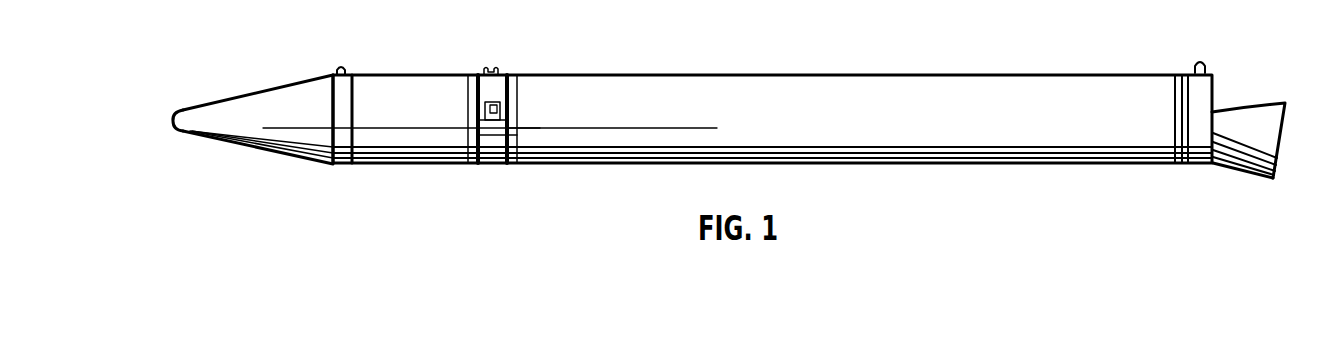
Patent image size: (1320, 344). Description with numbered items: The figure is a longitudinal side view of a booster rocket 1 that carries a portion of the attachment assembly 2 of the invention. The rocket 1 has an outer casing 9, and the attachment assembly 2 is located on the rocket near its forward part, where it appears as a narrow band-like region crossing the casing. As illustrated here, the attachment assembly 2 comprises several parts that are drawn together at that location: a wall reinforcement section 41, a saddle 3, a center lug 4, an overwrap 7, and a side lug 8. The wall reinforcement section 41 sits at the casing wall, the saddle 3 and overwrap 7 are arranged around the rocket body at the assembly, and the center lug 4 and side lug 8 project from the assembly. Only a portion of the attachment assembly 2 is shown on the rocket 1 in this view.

The rocket 1 is at (729, 118).
The attachment assembly 2 is at (509, 75).
The saddle 3 is at (478, 88).
The center lug 4 is at (488, 68).
The overwrap 7 is at (510, 132).
The side lug 8 is at (469, 148).
The outer casing 9 is at (571, 75).
The wall reinforcement section 41 is at (493, 163).